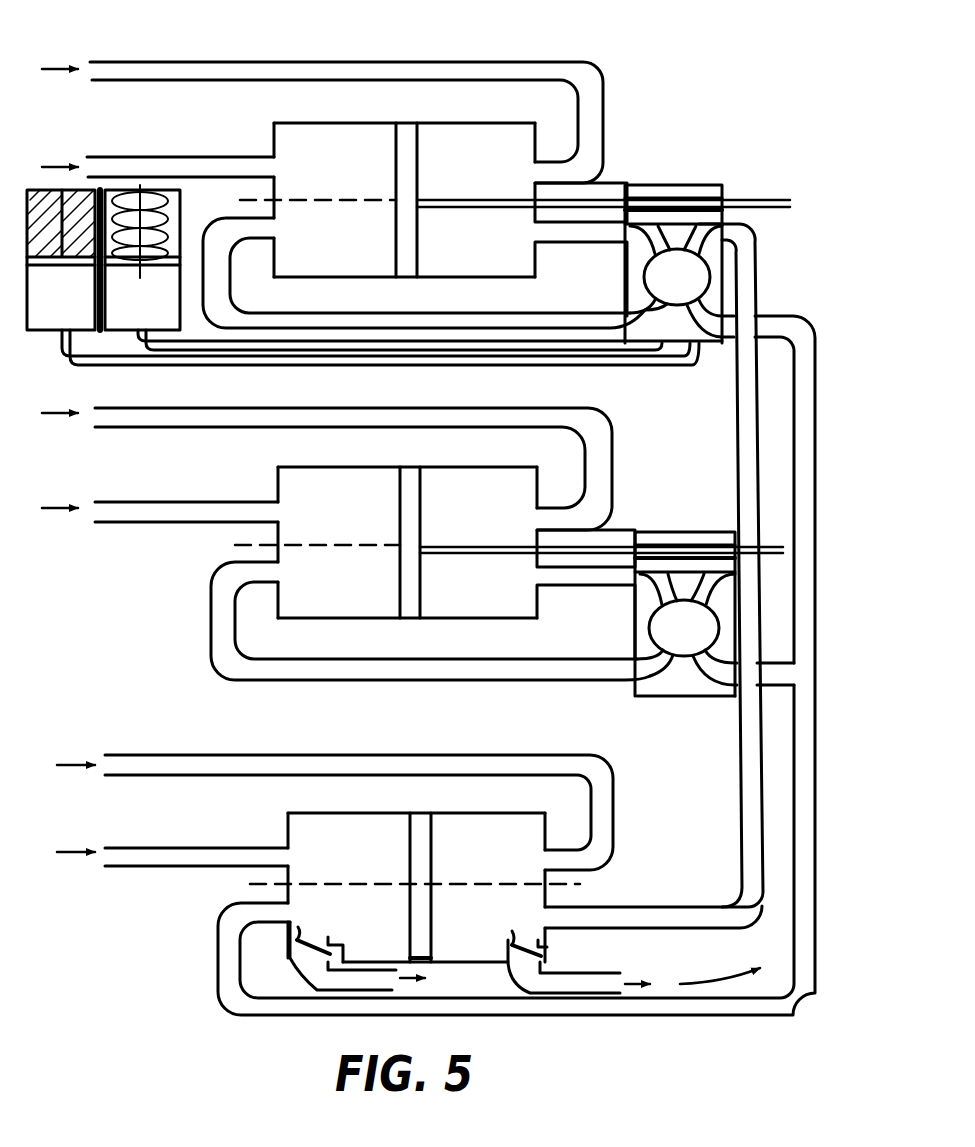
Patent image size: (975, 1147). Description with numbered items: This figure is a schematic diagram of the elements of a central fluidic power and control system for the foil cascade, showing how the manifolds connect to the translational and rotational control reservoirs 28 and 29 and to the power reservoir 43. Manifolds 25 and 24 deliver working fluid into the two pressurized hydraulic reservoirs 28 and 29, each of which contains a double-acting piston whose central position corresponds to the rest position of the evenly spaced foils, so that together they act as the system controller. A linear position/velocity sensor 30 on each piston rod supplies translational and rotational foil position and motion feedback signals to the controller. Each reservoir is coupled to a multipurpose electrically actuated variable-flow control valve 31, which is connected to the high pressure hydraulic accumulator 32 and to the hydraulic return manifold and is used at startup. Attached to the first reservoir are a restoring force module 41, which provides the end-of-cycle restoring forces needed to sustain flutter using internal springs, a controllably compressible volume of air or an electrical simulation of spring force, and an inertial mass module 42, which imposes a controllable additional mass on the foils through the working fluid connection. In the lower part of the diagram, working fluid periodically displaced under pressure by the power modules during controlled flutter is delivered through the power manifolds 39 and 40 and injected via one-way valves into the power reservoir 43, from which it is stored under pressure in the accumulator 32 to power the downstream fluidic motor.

The manifold 24 is at (197, 508).
The manifold 25 is at (258, 68).
The translational control reservoir 28 is at (470, 150).
The rotational control reservoir 29 is at (502, 486).
The linear position/velocity sensor 30 is at (676, 190).
The variable-flow control valve 31 is at (648, 283).
The high pressure hydraulic accumulator 32 is at (739, 966).
The power manifold 39 is at (196, 758).
The power manifold 40 is at (196, 853).
The restoring force module 41 is at (142, 257).
The inertial mass module 42 is at (61, 260).
The power reservoir 43 is at (476, 828).